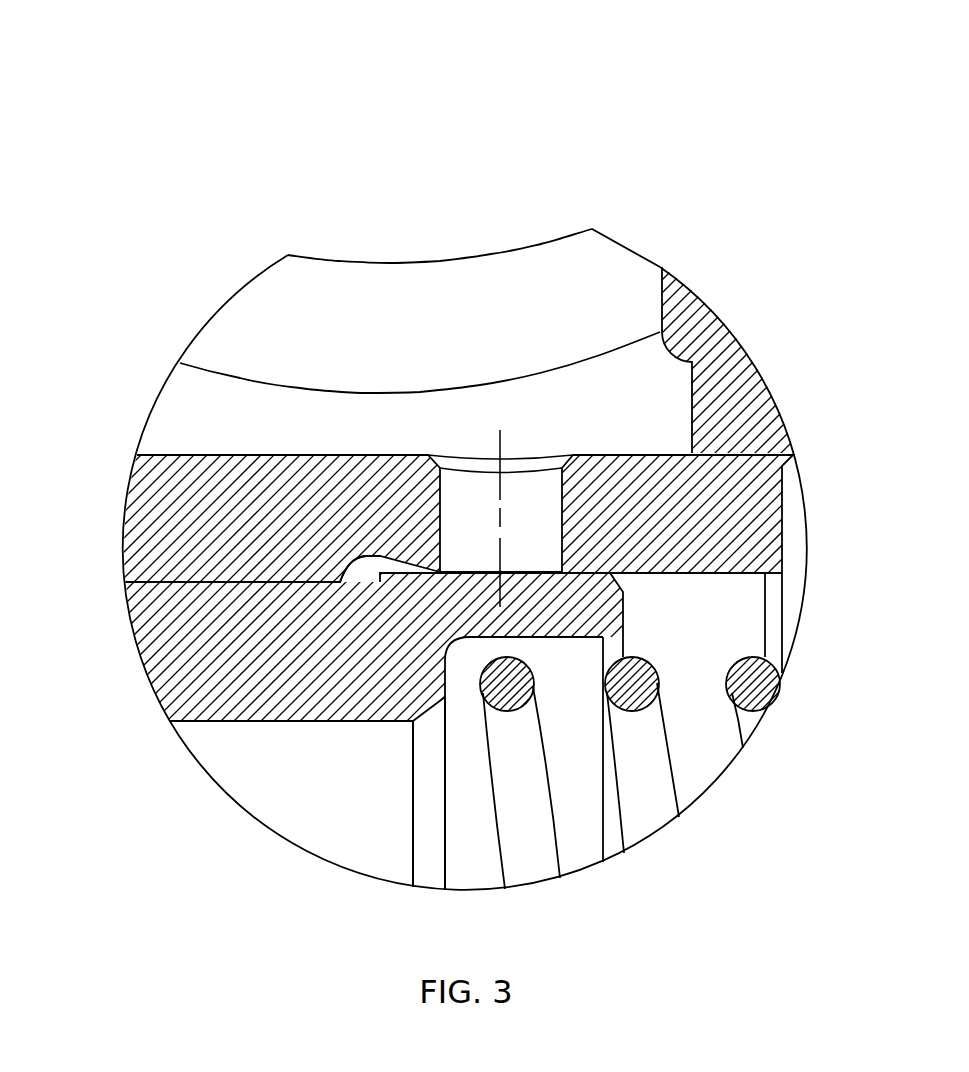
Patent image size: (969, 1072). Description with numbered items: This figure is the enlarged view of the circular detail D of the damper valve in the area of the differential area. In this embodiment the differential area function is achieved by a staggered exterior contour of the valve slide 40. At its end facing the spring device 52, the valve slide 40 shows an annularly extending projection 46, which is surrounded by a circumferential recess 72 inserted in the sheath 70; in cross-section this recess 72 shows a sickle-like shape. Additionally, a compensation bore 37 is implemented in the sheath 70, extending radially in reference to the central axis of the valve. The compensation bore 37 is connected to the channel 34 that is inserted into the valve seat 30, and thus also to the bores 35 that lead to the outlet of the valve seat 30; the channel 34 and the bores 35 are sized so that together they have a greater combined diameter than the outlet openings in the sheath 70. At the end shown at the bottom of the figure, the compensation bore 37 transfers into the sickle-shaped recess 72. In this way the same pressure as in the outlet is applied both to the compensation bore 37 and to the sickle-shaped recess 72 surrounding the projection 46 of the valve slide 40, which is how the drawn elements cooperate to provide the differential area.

The valve seat 30 is at (705, 325).
The channel 34 is at (665, 415).
The bores 35 is at (535, 263).
The compensation bore 37 is at (528, 488).
The valve slide 40 is at (168, 683).
The annularly extending projection 46 is at (397, 721).
The spring device 52 is at (540, 855).
The sheath 70 is at (168, 514).
The circumferential recess 72 is at (397, 721).
The detail D is at (380, 157).